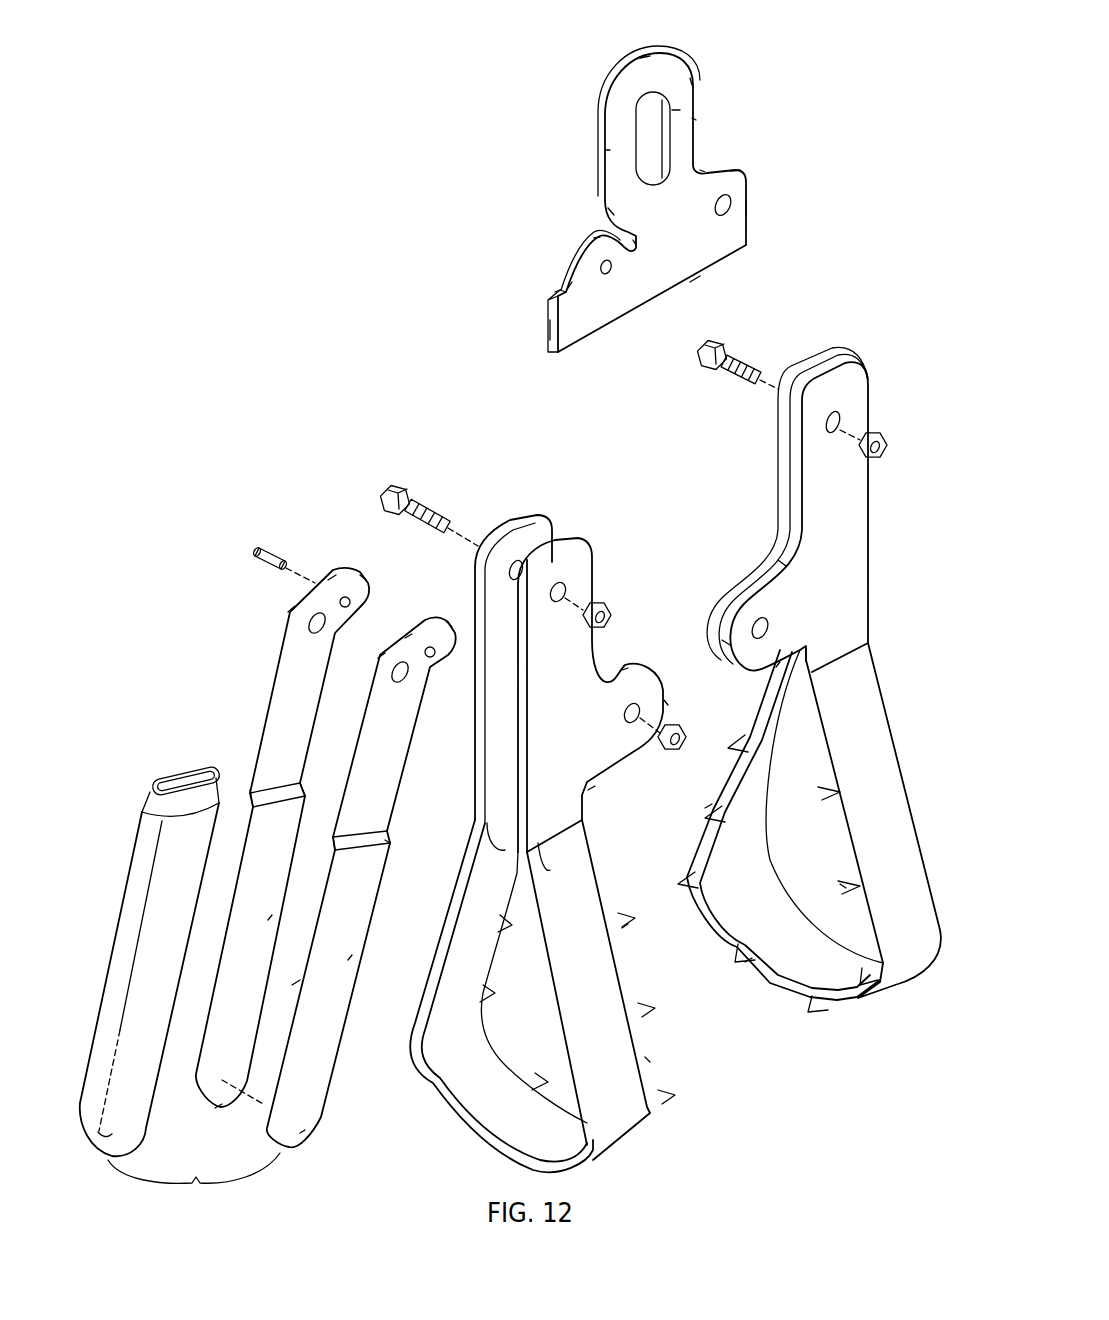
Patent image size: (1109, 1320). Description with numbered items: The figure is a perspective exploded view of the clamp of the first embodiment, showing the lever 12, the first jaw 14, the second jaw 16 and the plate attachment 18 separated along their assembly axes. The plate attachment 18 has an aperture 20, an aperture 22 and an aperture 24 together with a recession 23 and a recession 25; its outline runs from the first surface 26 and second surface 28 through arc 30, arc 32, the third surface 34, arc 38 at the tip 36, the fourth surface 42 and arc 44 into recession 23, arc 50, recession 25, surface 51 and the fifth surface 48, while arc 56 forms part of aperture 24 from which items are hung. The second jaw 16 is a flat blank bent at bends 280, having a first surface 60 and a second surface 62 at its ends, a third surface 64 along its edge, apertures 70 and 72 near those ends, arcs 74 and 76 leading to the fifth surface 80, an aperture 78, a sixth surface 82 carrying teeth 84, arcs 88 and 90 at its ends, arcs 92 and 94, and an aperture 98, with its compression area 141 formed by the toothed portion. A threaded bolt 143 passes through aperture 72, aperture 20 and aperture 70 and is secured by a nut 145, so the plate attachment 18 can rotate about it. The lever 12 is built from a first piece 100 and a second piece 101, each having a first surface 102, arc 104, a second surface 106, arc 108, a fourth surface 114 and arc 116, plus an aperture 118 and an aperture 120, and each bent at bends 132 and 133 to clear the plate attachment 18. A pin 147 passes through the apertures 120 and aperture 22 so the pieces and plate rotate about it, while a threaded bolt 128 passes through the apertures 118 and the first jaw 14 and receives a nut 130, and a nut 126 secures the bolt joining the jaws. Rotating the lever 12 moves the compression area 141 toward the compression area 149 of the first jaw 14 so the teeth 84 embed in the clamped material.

The lever 12 is at (194, 1184).
The first jaw 14 is at (600, 530).
The second jaw 16 is at (752, 453).
The plate attachment 18 is at (780, 143).
The aperture 20 is at (731, 203).
The aperture 22 is at (610, 272).
The recession 23 is at (638, 250).
The aperture 24 is at (672, 112).
The recession 25 is at (568, 288).
The first surface 26 is at (693, 280).
The second surface 28 is at (746, 208).
The arc 30 is at (735, 171).
The arc 32 is at (702, 170).
The third surface 34 is at (694, 118).
The tip 36 is at (652, 60).
The arc 38 is at (691, 78).
The fourth surface 42 is at (605, 152).
The arc 44 is at (610, 210).
The fifth surface 48 is at (552, 330).
The arc 50 is at (596, 240).
The surface 51 is at (556, 292).
The arc 56 is at (661, 178).
The first surface 60 is at (563, 538).
The second surface 62 is at (508, 525).
The third surface 64 is at (418, 1040).
The aperture 70 is at (840, 418).
The aperture 72 is at (568, 592).
The arc 74 is at (782, 565).
The arc 76 is at (722, 642).
The aperture 78 is at (768, 630).
The fifth surface 80 is at (776, 670).
The sixth surface 82 is at (646, 1058).
The teeth 84 is at (708, 806).
The arc 88 is at (812, 656).
The arc 90 is at (590, 790).
The arc 92 is at (667, 700).
The arc 94 is at (624, 672).
The aperture 98 is at (633, 724).
The first piece 100 is at (254, 1042).
The second piece 101 is at (327, 1075).
The first surface 102 is at (220, 975).
The arc 104 is at (290, 613).
The second surface 106 is at (330, 583).
The arc 108 is at (362, 576).
The fourth surface 114 is at (270, 922).
The arc 116 is at (217, 1108).
The aperture 118 is at (318, 632).
The aperture 120 is at (348, 606).
The nut 126 is at (687, 742).
The threaded bolt 128 is at (392, 484).
The nut 130 is at (612, 614).
The bend 132 is at (308, 795).
The bend 133 is at (250, 792).
The compression area 141 is at (875, 865).
The threaded bolt 143 is at (722, 348).
The nut 145 is at (888, 447).
The pin 147 is at (256, 557).
The compression area 149 is at (585, 1034).
The bends 280 is at (530, 870).